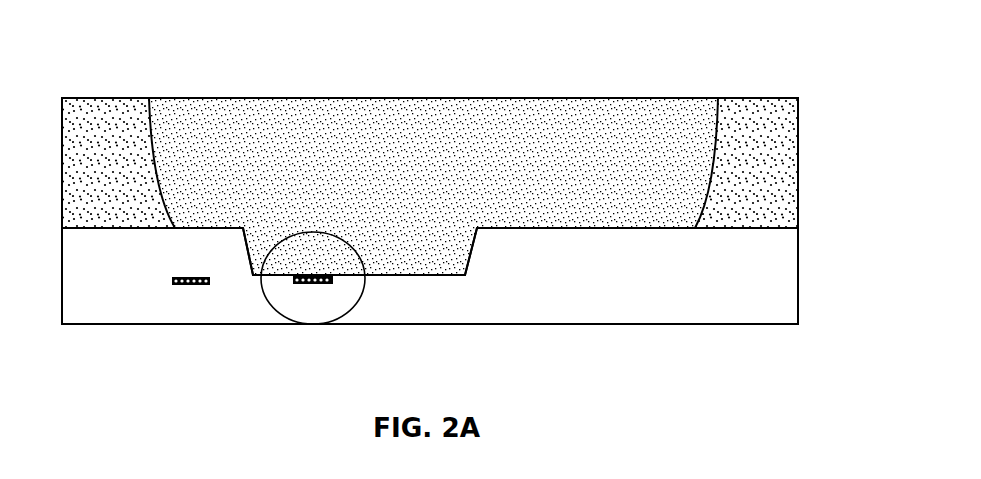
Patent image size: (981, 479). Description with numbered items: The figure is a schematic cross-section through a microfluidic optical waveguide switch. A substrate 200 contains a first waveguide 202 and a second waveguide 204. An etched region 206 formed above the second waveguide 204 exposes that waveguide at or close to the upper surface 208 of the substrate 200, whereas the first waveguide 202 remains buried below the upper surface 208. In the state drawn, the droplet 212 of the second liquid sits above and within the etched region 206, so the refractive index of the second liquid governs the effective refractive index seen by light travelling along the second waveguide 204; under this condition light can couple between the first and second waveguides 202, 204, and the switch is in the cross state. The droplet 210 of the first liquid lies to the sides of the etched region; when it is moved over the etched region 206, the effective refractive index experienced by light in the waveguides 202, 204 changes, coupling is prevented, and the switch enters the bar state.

The substrate 200 is at (774, 282).
The first waveguide 202 is at (185, 276).
The second waveguide 204 is at (292, 283).
The etched region 206 is at (470, 250).
The upper surface 208 is at (430, 278).
The droplet of the first liquid 210 is at (103, 98).
The droplet of the second liquid 212 is at (333, 98).